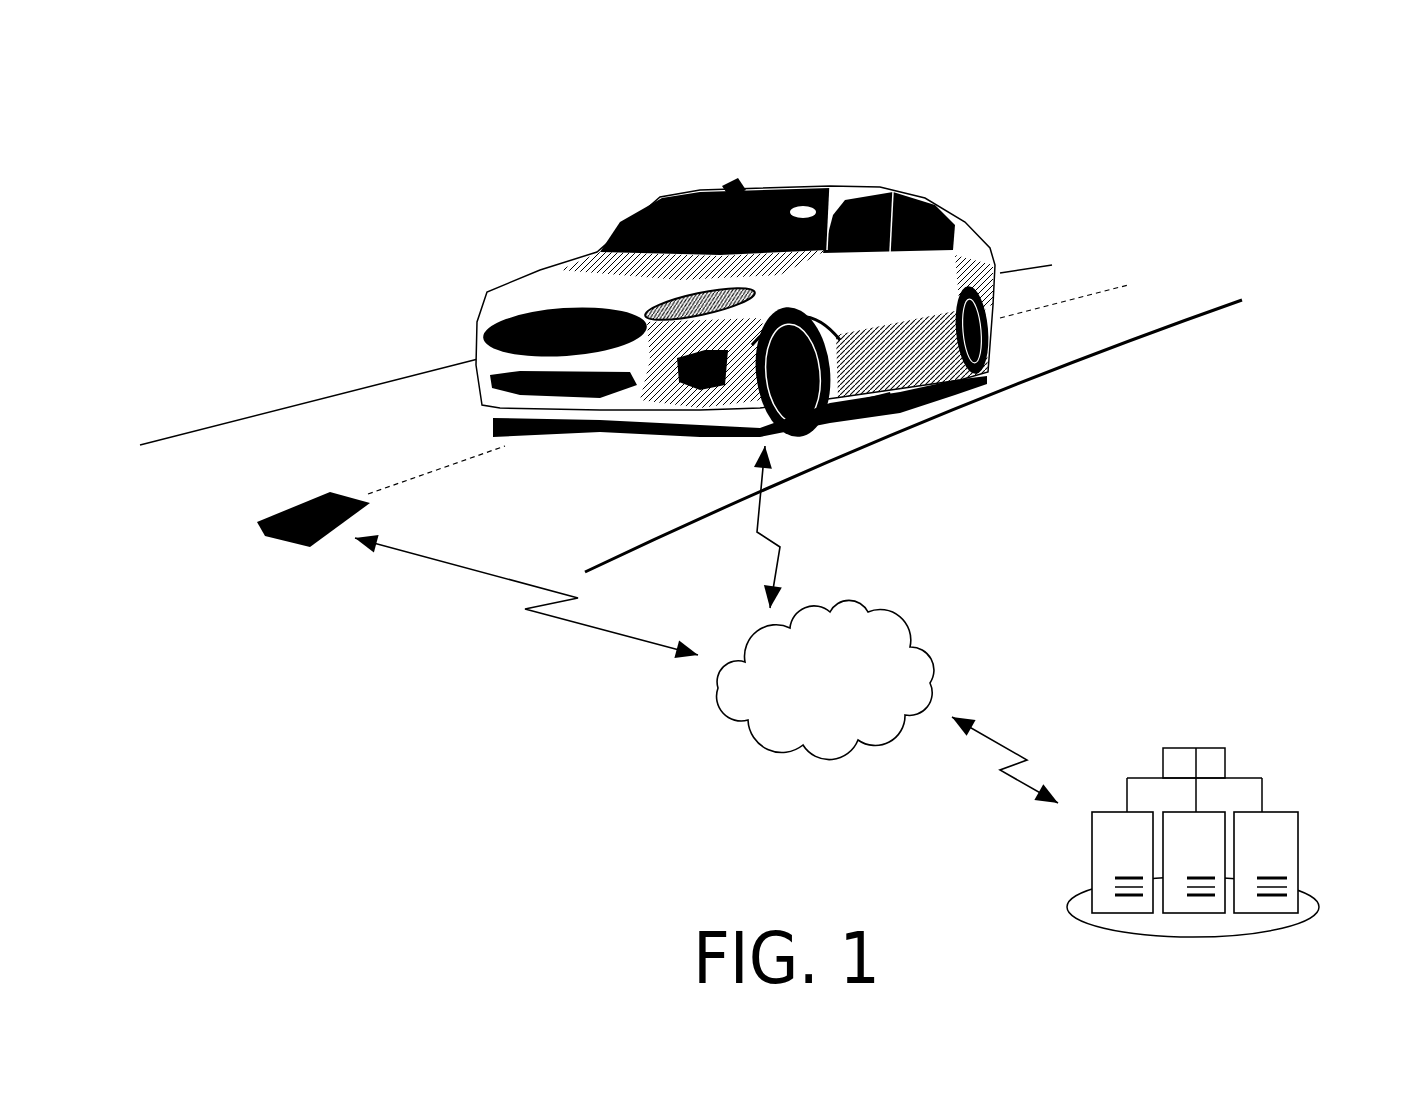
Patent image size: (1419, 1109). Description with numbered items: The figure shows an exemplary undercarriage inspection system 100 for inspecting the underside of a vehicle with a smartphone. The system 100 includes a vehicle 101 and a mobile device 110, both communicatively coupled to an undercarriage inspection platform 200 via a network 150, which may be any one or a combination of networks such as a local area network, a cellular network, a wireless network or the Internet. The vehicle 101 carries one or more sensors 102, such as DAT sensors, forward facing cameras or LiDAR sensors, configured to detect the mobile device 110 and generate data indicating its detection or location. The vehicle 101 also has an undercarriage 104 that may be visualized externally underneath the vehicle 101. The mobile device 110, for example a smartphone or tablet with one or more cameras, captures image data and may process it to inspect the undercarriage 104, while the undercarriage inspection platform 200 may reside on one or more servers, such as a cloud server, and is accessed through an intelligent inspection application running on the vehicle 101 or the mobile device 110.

The undercarriage inspection system 100 is at (370, 130).
The vehicle 101 is at (827, 187).
The sensors 102 is at (730, 183).
The undercarriage 104 is at (874, 404).
The mobile device 110 is at (287, 510).
The network 150 is at (845, 681).
The undercarriage inspection platform 200 is at (1262, 778).